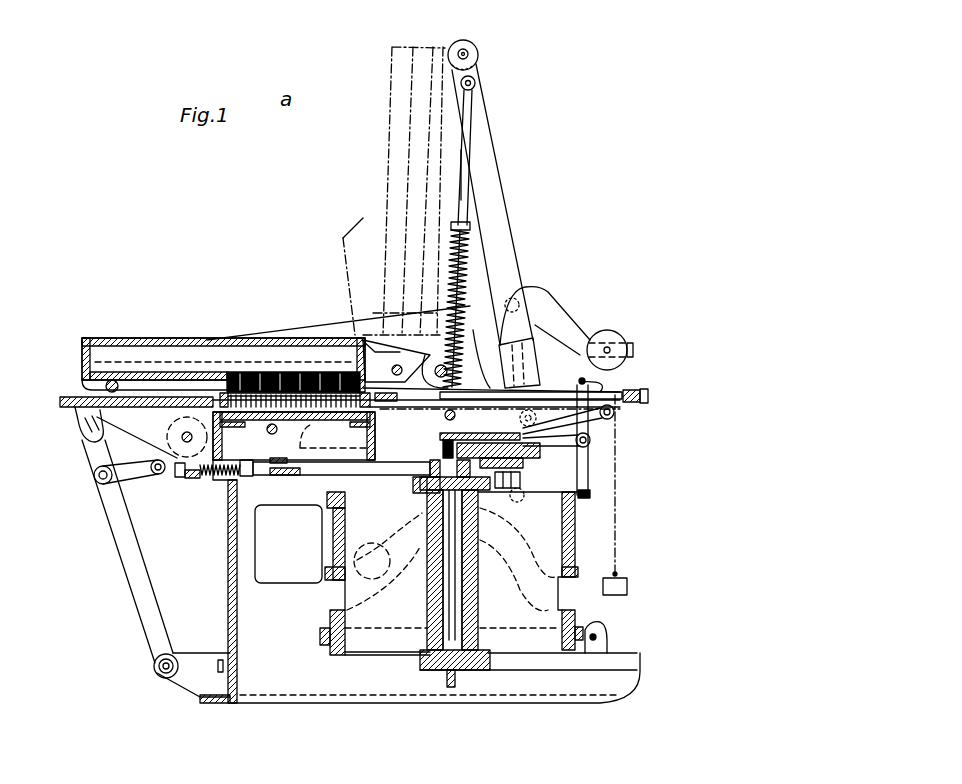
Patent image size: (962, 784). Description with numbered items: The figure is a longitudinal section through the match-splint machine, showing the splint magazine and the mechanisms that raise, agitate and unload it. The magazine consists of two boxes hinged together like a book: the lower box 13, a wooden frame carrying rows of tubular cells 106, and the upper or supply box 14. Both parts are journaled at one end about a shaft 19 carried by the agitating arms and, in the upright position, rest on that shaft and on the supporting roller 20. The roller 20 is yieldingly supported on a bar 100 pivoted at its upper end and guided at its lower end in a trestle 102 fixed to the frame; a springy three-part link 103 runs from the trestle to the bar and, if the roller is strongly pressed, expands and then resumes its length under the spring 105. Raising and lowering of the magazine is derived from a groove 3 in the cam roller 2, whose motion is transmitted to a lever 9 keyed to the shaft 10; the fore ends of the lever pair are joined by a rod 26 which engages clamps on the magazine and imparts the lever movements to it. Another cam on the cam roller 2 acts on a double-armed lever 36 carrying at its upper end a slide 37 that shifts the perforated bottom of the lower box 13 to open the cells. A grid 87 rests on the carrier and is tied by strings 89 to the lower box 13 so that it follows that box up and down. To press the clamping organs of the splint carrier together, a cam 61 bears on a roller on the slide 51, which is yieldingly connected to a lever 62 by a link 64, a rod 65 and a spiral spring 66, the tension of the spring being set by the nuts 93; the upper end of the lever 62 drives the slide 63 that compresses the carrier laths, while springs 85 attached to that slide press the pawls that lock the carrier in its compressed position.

The cam roller 2 is at (567, 532).
The groove 3 is at (562, 592).
The lever 9 is at (520, 300).
The shaft 10 is at (460, 340).
The lower box 13 is at (82, 378).
The upper box 14 is at (82, 355).
The shaft 19 is at (362, 340).
The supporting roller 20 is at (478, 57).
The rod 26 is at (83, 390).
The double-armed lever 36 is at (590, 465).
The slide 37 is at (575, 392).
The slide 51 is at (192, 478).
The cam 61 is at (415, 478).
The lever 62 is at (128, 565).
The slide 63 is at (74, 410).
The link 64 is at (130, 482).
The rod 65 is at (295, 476).
The spiral spring 66 is at (210, 476).
The springs 85 is at (270, 385).
The grid 87 is at (233, 372).
The strings 89 is at (363, 218).
The nuts 93 is at (248, 476).
The bar 100 is at (490, 145).
The trestle 102 is at (525, 480).
The springy three-part link 103 is at (465, 185).
The spring 105 is at (470, 243).
The tubular cells 106 is at (282, 375).